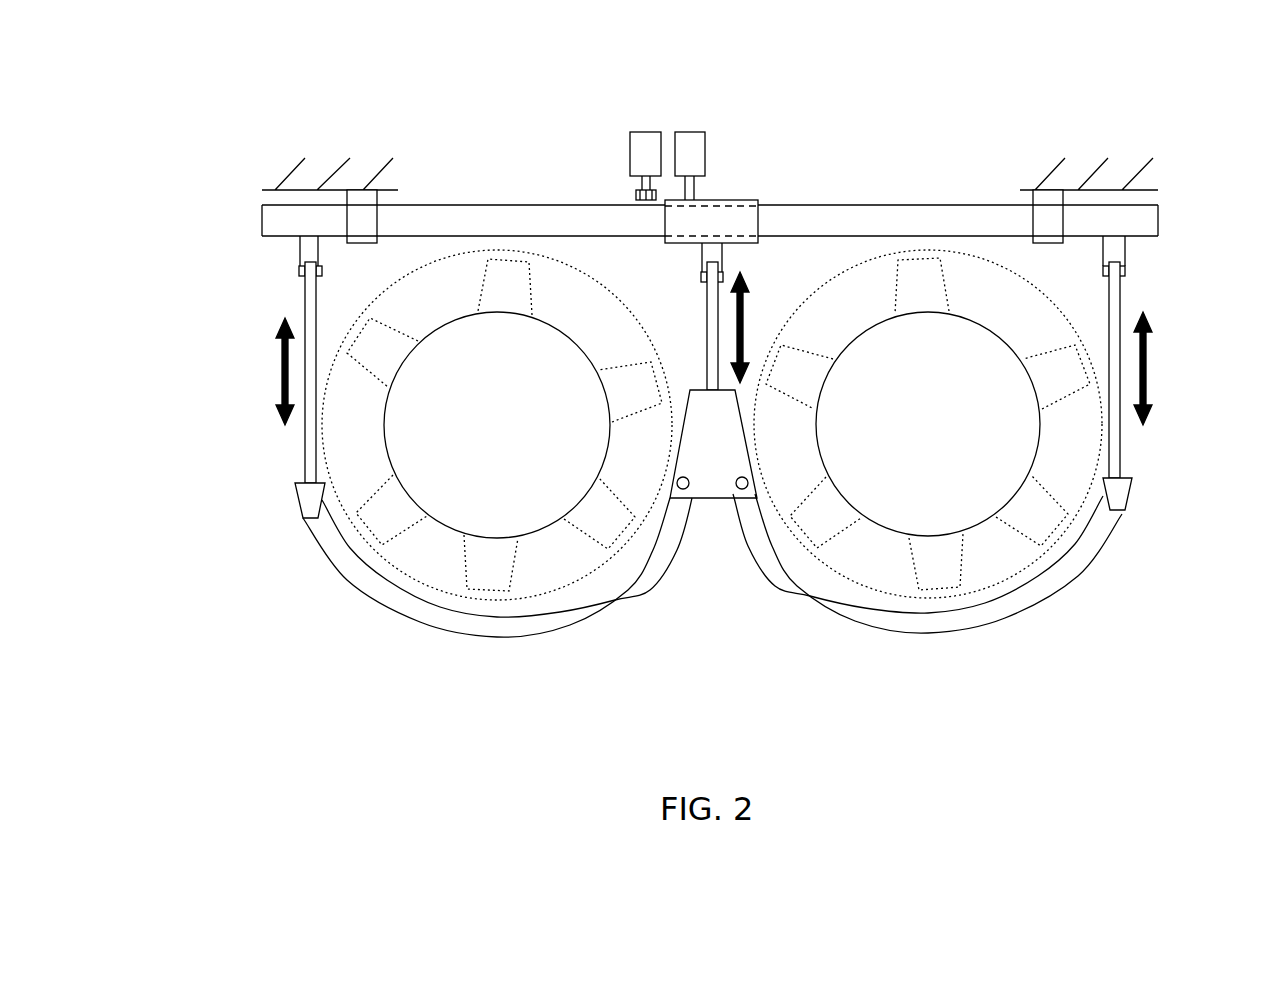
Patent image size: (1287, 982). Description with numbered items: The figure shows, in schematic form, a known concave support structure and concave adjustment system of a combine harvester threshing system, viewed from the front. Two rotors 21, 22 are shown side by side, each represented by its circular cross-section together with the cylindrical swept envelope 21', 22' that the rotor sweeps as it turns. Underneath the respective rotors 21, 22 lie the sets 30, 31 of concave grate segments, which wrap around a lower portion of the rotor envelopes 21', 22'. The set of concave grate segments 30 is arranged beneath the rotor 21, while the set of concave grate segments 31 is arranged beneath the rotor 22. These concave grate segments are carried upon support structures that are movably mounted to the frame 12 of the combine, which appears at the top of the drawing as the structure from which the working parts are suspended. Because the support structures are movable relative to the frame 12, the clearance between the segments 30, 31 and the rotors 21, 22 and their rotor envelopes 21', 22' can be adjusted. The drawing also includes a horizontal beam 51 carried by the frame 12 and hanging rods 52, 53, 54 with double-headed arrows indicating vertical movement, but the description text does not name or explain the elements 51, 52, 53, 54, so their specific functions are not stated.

The frame 12 is at (363, 150).
The horizontal beam 51 is at (905, 215).
The central lifting actuator 53 is at (700, 298).
The first lifting rod 52 is at (307, 300).
The second lifting rod 54 is at (1122, 300).
The rotor 22 is at (411, 425).
The cylindrical swept envelope 22' is at (497, 459).
The rotor 21 is at (1034, 424).
The cylindrical swept envelope 21' is at (928, 453).
The set of concave grate segments 31 is at (585, 612).
The set of concave grate segments 30 is at (1040, 590).